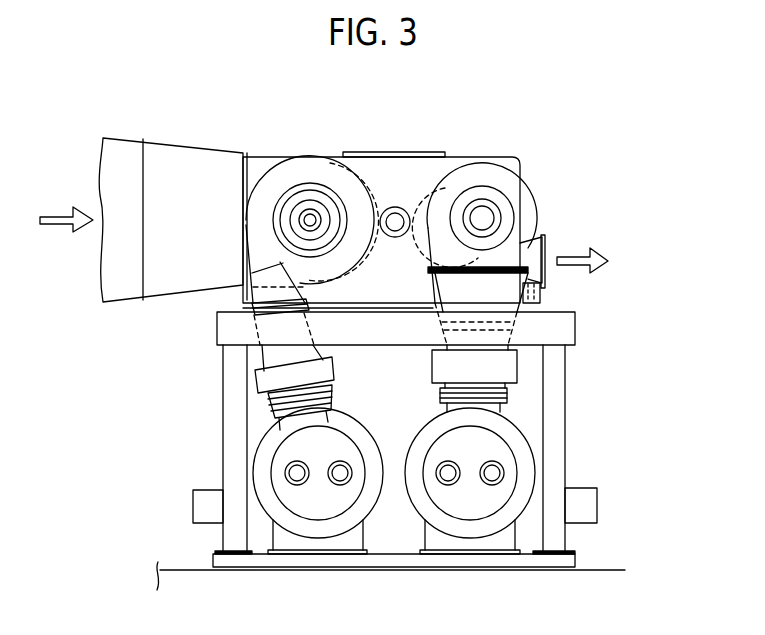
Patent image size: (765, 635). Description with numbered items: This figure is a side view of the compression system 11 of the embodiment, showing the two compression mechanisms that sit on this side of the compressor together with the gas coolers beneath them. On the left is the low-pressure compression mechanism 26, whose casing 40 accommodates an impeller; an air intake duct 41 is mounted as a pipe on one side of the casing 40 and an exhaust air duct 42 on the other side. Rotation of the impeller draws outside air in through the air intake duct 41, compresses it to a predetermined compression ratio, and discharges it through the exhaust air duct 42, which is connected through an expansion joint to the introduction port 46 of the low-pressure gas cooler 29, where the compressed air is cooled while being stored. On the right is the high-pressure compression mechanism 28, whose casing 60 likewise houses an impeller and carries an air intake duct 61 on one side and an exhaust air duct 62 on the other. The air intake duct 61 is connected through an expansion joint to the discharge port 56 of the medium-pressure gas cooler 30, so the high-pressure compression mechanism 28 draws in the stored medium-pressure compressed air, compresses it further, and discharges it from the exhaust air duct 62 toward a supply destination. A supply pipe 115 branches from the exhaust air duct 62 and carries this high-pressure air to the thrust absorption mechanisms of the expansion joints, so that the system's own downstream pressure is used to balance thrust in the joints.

The compression system 11 is at (610, 126).
The low-pressure compression mechanism 26 is at (309, 177).
The high-pressure compression mechanism 28 is at (489, 200).
The casing 40 is at (274, 185).
The casing 60 is at (480, 170).
The air intake duct 41 is at (121, 158).
The exhaust air duct 42 is at (268, 348).
The air intake duct 61 is at (483, 300).
The exhaust air duct 62 is at (530, 252).
The supply pipe 115 is at (540, 296).
The introduction port 46 is at (268, 415).
The discharge port 56 is at (505, 408).
The low-pressure gas cooler 29 is at (320, 500).
The medium-pressure gas cooler 30 is at (470, 500).